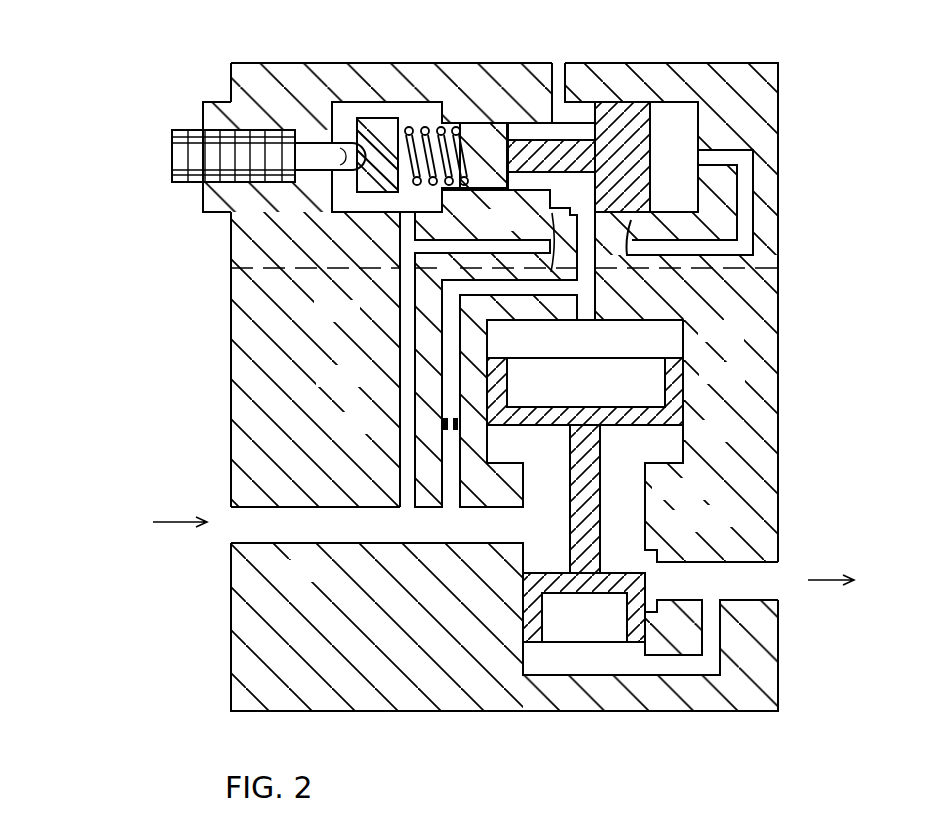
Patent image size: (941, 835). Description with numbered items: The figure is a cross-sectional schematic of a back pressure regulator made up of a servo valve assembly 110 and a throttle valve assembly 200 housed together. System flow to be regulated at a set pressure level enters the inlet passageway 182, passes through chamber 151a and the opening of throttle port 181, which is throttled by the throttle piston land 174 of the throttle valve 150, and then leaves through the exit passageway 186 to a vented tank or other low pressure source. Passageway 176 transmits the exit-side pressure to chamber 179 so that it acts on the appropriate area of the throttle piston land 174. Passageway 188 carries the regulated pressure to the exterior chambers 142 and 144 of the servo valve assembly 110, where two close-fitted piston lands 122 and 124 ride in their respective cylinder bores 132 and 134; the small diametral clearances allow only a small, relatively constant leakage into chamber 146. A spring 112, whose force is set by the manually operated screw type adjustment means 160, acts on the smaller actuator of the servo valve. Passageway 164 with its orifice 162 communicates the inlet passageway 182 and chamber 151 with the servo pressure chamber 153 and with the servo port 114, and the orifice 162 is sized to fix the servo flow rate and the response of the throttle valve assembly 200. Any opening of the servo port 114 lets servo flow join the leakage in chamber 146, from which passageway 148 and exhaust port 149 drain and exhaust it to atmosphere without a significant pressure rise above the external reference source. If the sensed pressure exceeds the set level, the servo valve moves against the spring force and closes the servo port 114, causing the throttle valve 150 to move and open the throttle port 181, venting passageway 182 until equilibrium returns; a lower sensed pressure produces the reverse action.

The servo valve assembly 110 is at (782, 212).
The spring 112 is at (405, 125).
The servo port 114 is at (552, 222).
The piston land 122 is at (663, 100).
The piston land 124 is at (467, 115).
The cylinder bore 132 is at (688, 130).
The cylinder bore 134 is at (530, 120).
The exterior chamber 142 is at (713, 110).
The exterior chamber 144 is at (427, 110).
The chamber 146 is at (592, 97).
The passageway 148 is at (580, 98).
The exhaust port 149 is at (562, 60).
The throttle valve 150 is at (684, 366).
The chamber 151 is at (667, 448).
The chamber 151a is at (627, 507).
The servo pressure chamber 153 is at (668, 337).
The screw type adjustment means 160 is at (176, 152).
The orifice 162 is at (440, 415).
The passageway 164 is at (446, 463).
The throttle piston land 174 is at (523, 645).
The passageway 176 is at (722, 641).
The chamber 179 is at (618, 658).
The throttle port 181 is at (660, 552).
The inlet passageway 182 is at (298, 546).
The exit passageway 186 is at (703, 562).
The passageway 188 is at (398, 313).
The throttle valve assembly 200 is at (782, 311).